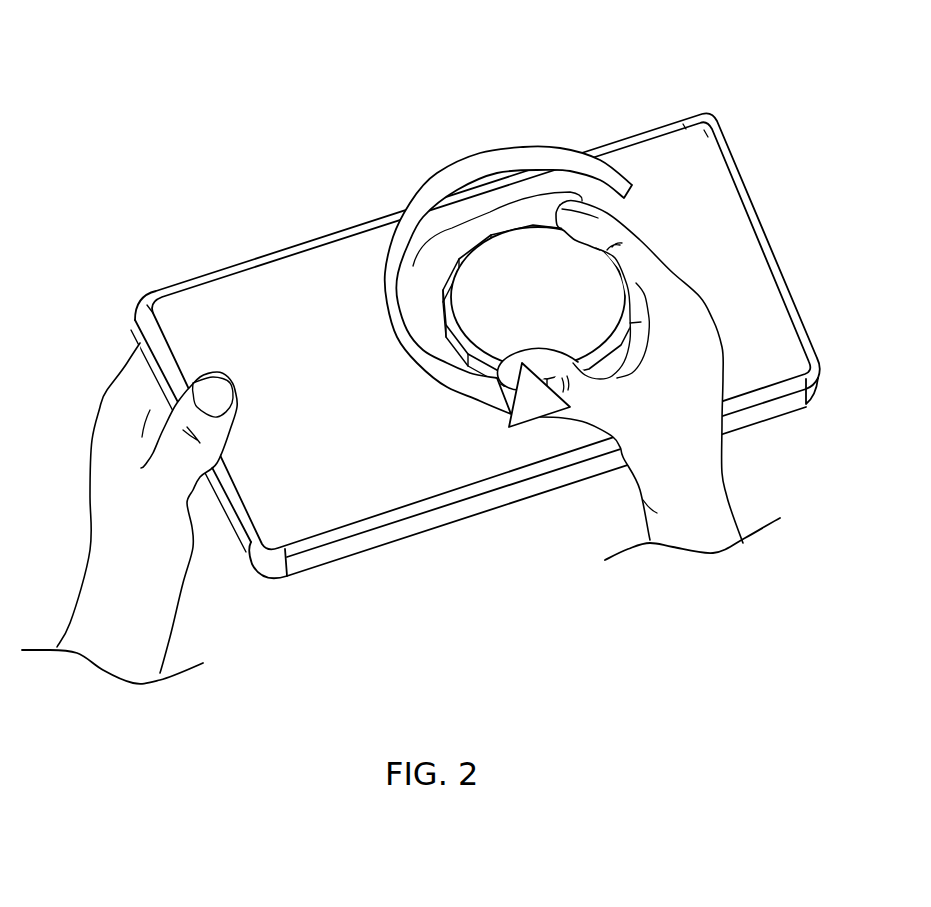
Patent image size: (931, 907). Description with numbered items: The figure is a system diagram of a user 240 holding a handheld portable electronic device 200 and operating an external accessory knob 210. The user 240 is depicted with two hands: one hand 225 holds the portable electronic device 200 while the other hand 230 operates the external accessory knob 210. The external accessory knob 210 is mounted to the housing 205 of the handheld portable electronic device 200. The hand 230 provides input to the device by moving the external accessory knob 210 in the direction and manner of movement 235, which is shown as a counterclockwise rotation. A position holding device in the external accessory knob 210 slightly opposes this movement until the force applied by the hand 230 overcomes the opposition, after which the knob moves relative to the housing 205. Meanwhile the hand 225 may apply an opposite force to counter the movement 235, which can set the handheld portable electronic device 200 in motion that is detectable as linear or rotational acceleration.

The handheld portable electronic device 200 is at (140, 60).
The housing 205 is at (747, 253).
The external accessory knob 210 is at (492, 214).
The hand 225 is at (122, 398).
The hand 230 is at (727, 450).
The movement 235 is at (410, 197).
The user 240 is at (529, 614).